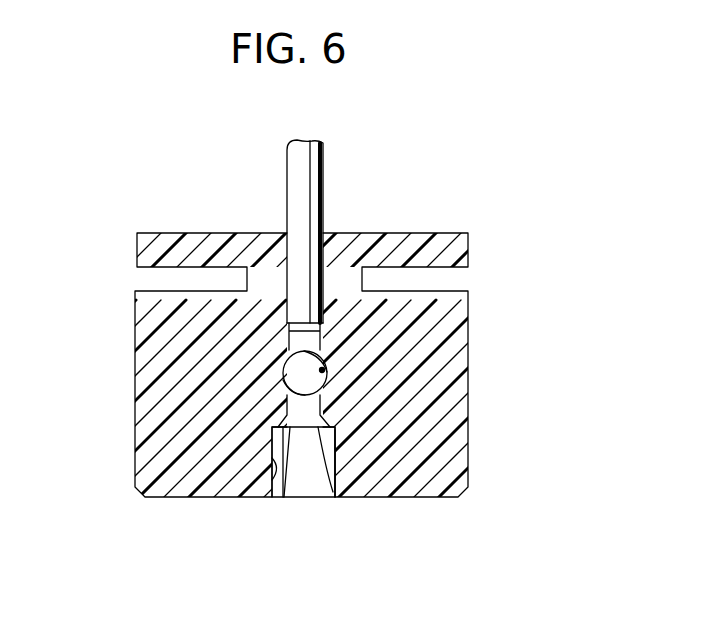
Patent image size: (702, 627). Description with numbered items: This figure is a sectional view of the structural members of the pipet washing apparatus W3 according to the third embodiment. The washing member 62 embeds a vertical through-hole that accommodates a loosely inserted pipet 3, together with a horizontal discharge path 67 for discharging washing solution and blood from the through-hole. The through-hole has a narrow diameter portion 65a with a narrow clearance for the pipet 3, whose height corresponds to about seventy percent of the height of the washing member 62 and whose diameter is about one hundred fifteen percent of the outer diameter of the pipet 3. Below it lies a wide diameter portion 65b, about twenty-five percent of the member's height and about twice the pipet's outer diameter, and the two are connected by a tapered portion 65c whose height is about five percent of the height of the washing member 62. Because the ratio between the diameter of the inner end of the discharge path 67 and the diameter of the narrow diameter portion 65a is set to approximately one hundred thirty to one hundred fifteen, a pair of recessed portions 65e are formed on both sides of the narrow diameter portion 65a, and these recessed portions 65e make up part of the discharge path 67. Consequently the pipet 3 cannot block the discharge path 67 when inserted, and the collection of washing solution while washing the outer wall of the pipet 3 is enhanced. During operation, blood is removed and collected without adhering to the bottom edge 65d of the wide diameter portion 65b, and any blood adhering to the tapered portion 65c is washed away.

The pipet washing apparatus W3 is at (351, 328).
The pipet 3 is at (310, 180).
The washing member 62 is at (453, 242).
The narrow diameter portion 65a is at (290, 338).
The wide diameter portion 65b is at (273, 498).
The tapered portion 65c is at (328, 493).
The bottom edge 65d is at (337, 498).
The recessed portions 65e is at (323, 357).
The discharge path 67 is at (327, 380).